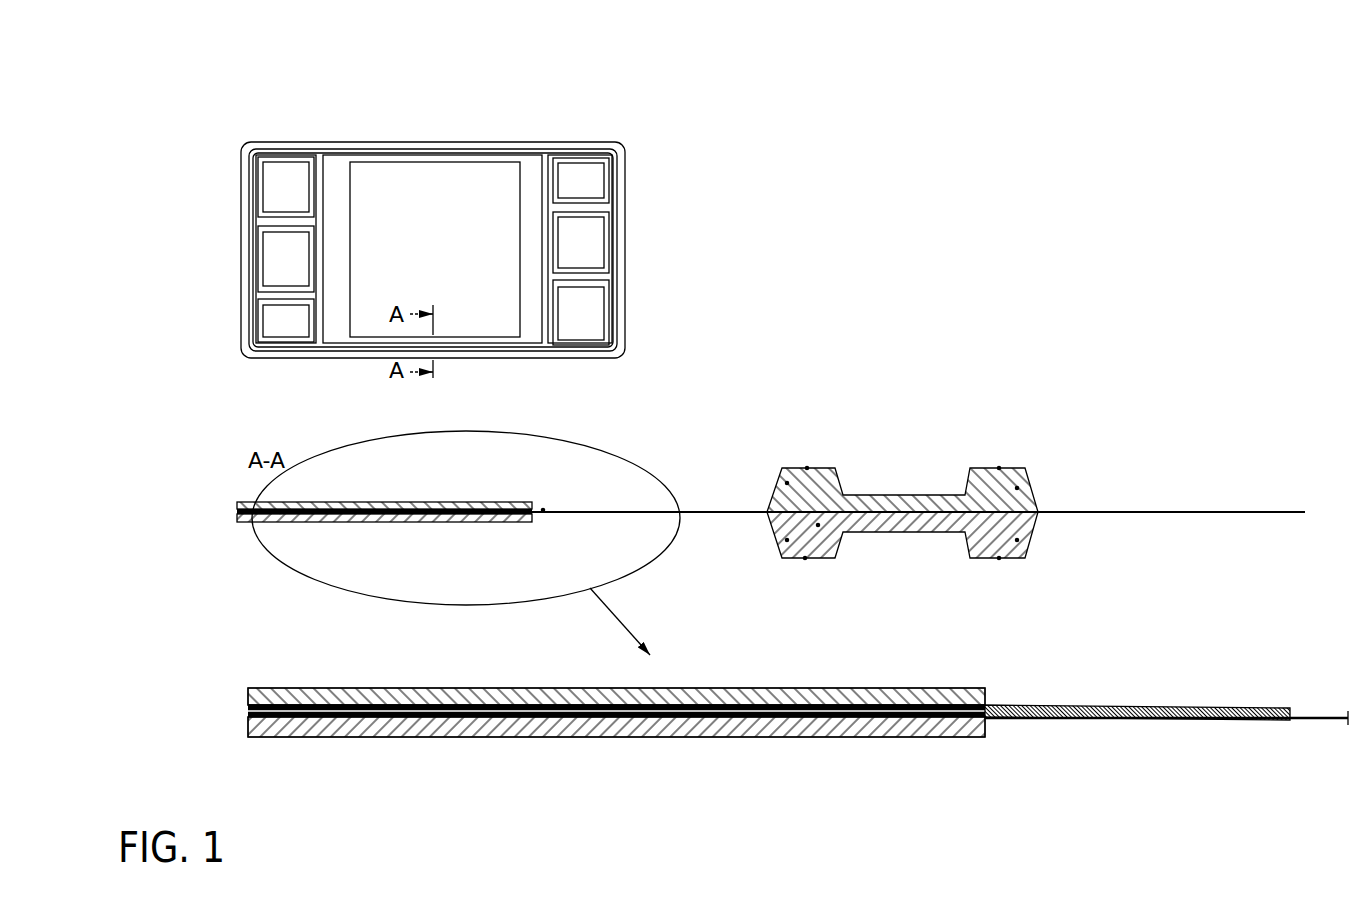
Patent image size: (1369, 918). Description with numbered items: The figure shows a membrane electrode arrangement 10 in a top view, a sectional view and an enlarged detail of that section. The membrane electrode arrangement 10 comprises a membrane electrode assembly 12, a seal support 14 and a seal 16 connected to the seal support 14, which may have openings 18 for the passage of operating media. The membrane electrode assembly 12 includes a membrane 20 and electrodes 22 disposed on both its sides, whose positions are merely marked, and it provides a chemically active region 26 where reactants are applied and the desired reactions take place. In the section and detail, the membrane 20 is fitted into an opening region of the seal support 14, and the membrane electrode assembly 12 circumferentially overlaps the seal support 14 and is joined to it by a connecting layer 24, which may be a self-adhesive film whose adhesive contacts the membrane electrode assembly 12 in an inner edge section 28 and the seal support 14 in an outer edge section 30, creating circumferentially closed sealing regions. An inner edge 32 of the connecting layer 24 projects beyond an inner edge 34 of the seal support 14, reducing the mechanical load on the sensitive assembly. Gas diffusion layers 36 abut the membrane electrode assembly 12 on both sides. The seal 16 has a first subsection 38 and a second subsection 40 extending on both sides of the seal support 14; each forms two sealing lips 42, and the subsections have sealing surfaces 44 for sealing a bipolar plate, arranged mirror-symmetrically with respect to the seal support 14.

The membrane electrode arrangement 10 is at (706, 134).
The membrane electrode assembly 12 is at (440, 222).
The seal support 14 is at (533, 178).
The seal 16 is at (519, 156).
The openings 18 is at (583, 180).
The membrane 20 is at (280, 512).
The electrodes 22 is at (478, 707).
The connecting layer 24 is at (357, 162).
The chemically active region 26 is at (616, 441).
The inner edge section 28 is at (837, 704).
The outer edge section 30 is at (1130, 706).
The inner edge of connecting layer 32 is at (505, 697).
The inner edge of seal support 34 is at (630, 738).
The gas diffusion layers 36 is at (387, 198).
The first subsection 38 is at (813, 508).
The second subsection 40 is at (818, 525).
The sealing lips 42 is at (787, 483).
The sealing surfaces 44 is at (807, 468).